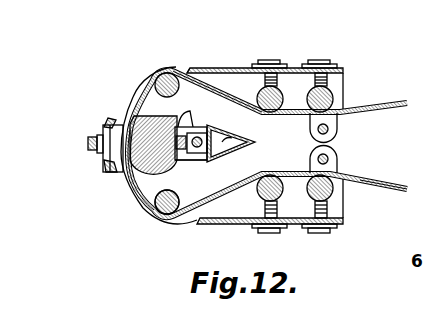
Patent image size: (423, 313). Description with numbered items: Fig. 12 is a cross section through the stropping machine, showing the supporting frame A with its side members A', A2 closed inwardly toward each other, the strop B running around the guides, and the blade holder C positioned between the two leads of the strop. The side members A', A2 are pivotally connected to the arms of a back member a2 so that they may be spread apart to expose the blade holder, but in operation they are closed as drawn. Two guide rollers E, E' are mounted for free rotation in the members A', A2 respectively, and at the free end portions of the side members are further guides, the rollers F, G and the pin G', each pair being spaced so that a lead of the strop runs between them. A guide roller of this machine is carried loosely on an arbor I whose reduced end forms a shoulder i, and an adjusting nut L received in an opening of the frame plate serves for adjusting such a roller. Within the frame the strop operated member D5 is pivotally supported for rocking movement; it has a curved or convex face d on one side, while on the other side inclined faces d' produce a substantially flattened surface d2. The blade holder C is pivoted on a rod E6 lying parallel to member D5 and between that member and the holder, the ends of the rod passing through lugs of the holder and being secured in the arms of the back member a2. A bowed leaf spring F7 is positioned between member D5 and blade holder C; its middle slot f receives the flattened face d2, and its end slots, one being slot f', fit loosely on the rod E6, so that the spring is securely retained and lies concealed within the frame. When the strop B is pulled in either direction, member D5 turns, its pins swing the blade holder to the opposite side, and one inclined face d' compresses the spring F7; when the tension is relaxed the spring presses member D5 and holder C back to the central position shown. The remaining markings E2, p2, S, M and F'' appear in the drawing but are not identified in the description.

The blade holder C is at (307, 145).
The curved or convex face d is at (253, 143).
The slot f' is at (217, 98).
The inclined face d' is at (132, 188).
The strop B is at (136, 197).
The guide roller E is at (153, 64).
The lower roller E2 is at (165, 220).
The guide roller E' is at (146, 230).
The strop operated member D5 is at (137, 176).
The rod p2 is at (90, 141).
The back member a2 is at (105, 175).
The flattened surface d2 is at (193, 128).
The slot f is at (190, 171).
The spring F7 is at (187, 161).
The rod E6 is at (213, 128).
The spring S is at (222, 142).
The supporting frame A is at (265, 54).
The frame member A' is at (229, 53).
The frame member A2 is at (237, 224).
The upper left bolt M is at (292, 72).
The guide F is at (336, 66).
The adjusting nut L is at (275, 233).
The guide G is at (317, 231).
The shoulder i is at (284, 93).
The arbor I is at (281, 96).
The upper pivot block F'' is at (364, 125).
The guide pin G' is at (353, 161).